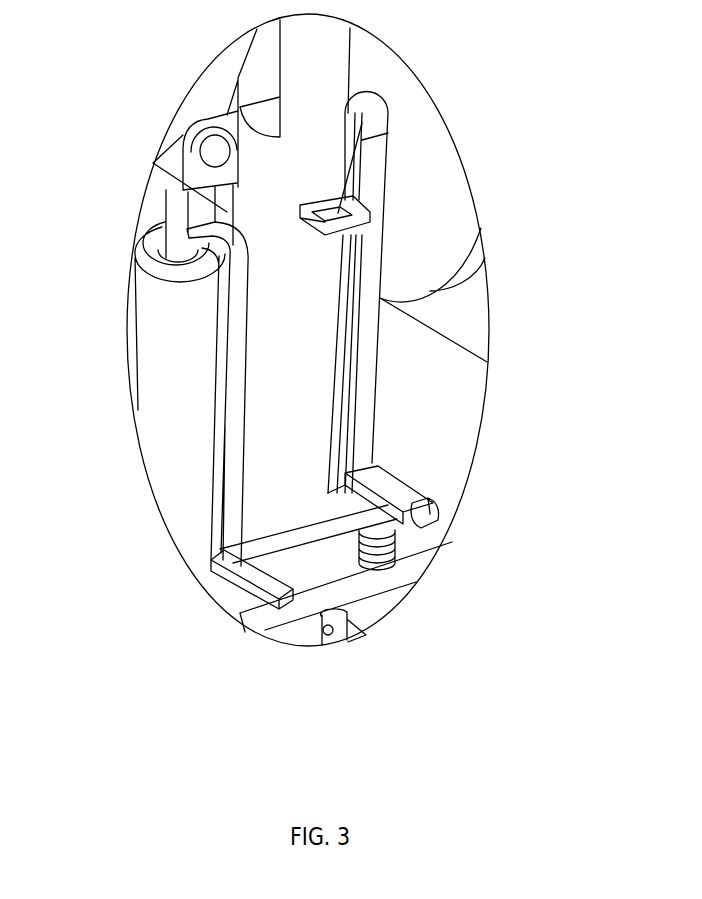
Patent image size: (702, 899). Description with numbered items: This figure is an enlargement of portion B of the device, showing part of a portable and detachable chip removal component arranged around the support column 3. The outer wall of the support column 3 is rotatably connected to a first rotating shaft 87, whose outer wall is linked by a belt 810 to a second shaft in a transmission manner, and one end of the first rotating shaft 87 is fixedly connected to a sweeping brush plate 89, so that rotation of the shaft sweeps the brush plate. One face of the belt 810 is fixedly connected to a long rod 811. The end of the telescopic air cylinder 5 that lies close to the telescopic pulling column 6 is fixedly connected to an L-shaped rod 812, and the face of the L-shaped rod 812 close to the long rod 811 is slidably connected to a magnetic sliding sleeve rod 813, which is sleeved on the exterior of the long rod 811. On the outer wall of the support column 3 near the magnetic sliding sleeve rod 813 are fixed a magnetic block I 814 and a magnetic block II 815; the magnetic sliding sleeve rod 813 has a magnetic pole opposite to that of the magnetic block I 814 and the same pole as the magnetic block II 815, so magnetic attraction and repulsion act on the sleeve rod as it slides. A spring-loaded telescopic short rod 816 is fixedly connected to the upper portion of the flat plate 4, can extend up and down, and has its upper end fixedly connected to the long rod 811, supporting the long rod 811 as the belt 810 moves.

The support column 3 is at (153, 163).
The flat plate 4 is at (236, 617).
The telescopic air cylinder 5 is at (178, 338).
The telescopic pulling column 6 is at (226, 70).
The first rotating shaft 87 is at (347, 135).
The sweeping brush plate 89 is at (452, 212).
The belt 810 is at (367, 360).
The long rod 811 is at (386, 481).
The L-shaped rod 812 is at (236, 420).
The magnetic sliding sleeve rod 813 is at (273, 554).
The magnetic block I 814 is at (362, 556).
The magnetic block II 815 is at (347, 207).
The spring-loaded telescopic short rod 816 is at (400, 537).
The portion B is at (490, 306).